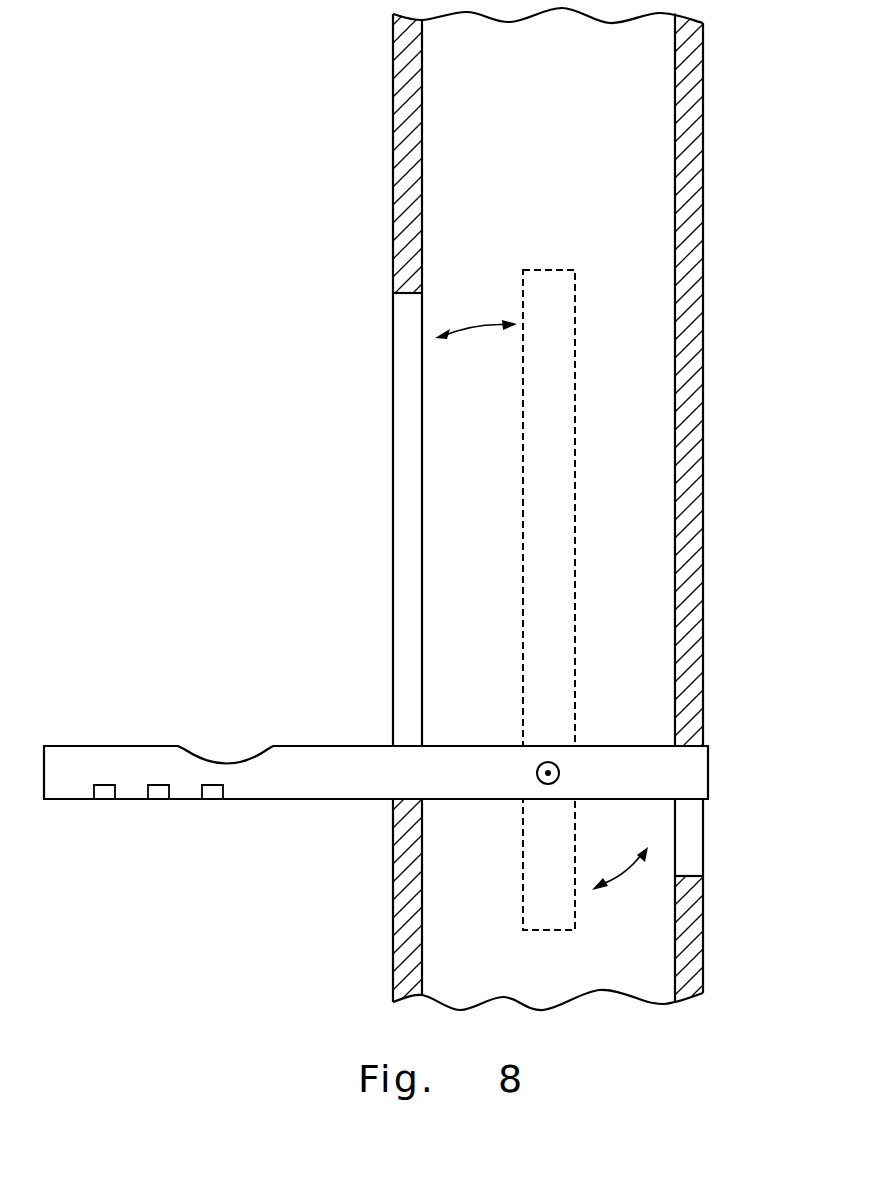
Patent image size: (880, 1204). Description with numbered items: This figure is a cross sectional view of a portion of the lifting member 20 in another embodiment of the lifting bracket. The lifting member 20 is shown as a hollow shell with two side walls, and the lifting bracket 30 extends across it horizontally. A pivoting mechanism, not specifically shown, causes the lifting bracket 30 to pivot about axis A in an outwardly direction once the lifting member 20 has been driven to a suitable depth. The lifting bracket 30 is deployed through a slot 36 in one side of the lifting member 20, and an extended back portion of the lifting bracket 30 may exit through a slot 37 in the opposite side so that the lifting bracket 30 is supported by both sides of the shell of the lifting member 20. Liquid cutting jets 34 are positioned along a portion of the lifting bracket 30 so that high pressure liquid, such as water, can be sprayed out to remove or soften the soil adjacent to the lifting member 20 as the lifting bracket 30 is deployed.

The lifting member 20 is at (334, 211).
The lifting bracket 30 is at (293, 799).
The liquid cutting jets 34 is at (158, 799).
The slot 36 is at (393, 548).
The slot 37 is at (693, 858).
The axis A is at (559, 770).